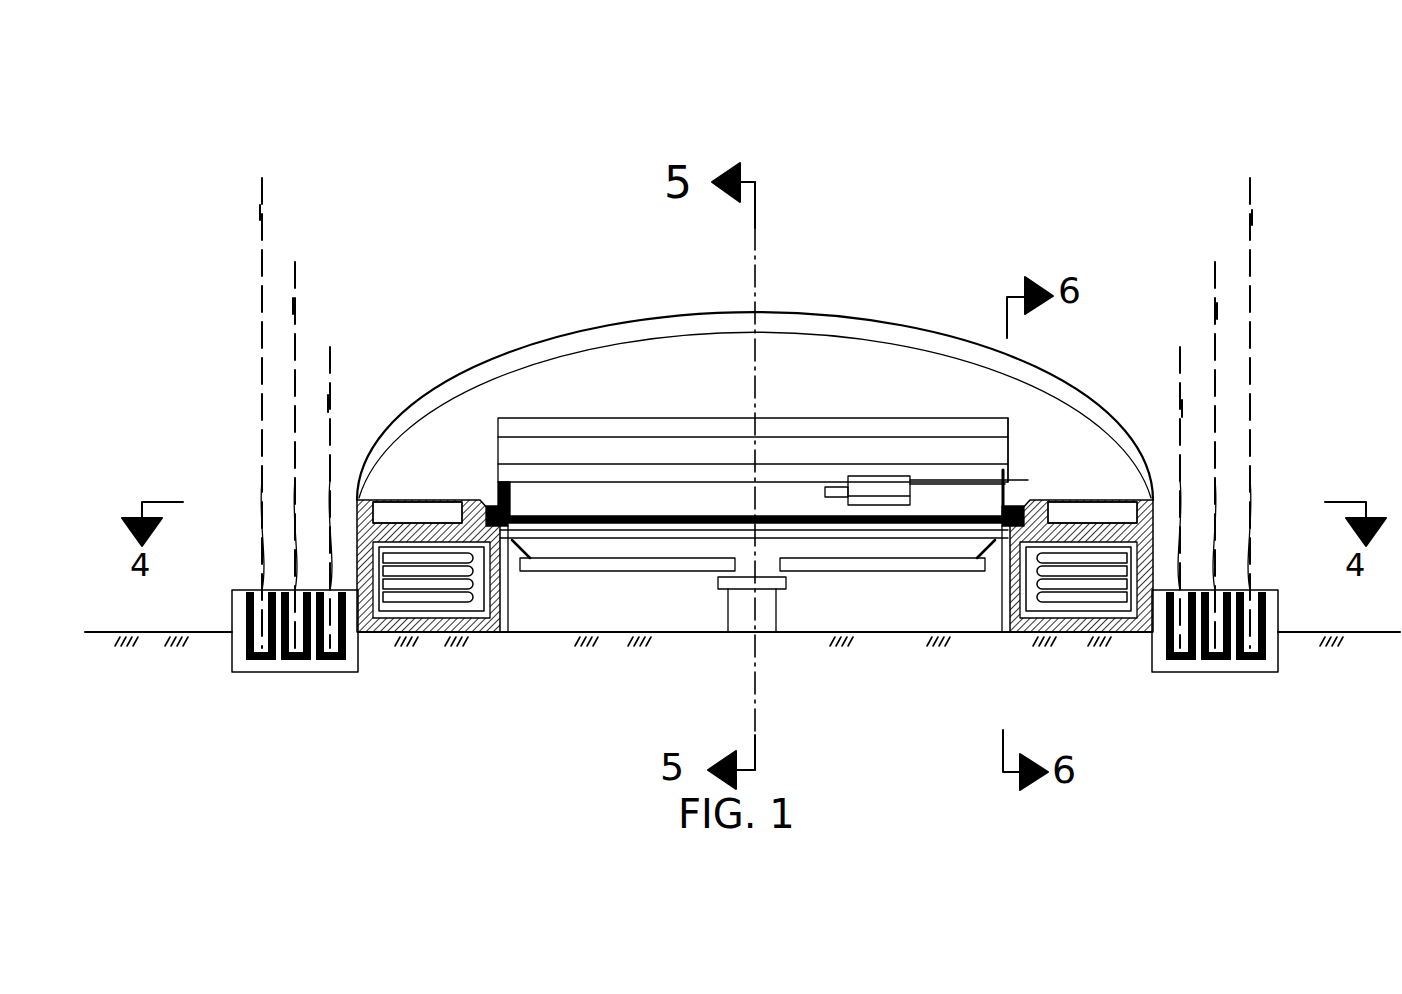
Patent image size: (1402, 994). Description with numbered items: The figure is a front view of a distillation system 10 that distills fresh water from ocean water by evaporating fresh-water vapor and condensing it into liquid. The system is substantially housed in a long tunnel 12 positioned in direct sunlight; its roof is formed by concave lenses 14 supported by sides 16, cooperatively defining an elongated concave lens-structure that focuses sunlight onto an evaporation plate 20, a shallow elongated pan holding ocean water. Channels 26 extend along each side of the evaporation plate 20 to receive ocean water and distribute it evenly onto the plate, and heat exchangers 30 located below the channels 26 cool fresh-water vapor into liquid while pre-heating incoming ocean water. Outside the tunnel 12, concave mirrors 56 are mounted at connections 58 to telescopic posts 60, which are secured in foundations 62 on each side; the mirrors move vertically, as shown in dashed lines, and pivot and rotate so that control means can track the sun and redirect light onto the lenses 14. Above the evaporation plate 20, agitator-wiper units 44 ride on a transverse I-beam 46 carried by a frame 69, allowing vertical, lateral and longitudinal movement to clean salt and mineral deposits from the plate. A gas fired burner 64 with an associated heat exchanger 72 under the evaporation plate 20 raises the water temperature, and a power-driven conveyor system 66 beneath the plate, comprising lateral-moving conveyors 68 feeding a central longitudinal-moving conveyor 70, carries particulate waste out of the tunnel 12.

The distillation system 10 is at (983, 264).
The tunnel 12 is at (1032, 368).
The concave lenses 14 is at (517, 344).
The sides 16 is at (357, 640).
The evaporation plate 20 is at (560, 512).
The channels 26 is at (416, 514).
The heat exchangers 30 is at (440, 608).
The agitator-wiper units 44 is at (858, 478).
The I-beam 46 is at (953, 464).
The concave mirrors 56 is at (268, 182).
The connection 58 is at (260, 213).
The telescopic posts 60 is at (330, 462).
The foundations 62 is at (232, 672).
The gas fired burner 64 is at (580, 540).
The conveyor system 66 is at (800, 612).
The lateral-moving conveyors 68 is at (635, 575).
The frame 69 is at (932, 418).
The central longitudinal-moving conveyor 70 is at (718, 598).
The heat exchanger 72 is at (540, 543).